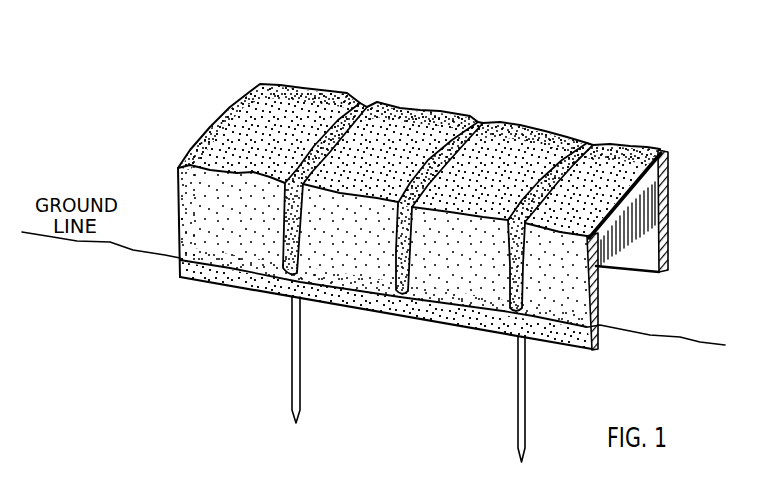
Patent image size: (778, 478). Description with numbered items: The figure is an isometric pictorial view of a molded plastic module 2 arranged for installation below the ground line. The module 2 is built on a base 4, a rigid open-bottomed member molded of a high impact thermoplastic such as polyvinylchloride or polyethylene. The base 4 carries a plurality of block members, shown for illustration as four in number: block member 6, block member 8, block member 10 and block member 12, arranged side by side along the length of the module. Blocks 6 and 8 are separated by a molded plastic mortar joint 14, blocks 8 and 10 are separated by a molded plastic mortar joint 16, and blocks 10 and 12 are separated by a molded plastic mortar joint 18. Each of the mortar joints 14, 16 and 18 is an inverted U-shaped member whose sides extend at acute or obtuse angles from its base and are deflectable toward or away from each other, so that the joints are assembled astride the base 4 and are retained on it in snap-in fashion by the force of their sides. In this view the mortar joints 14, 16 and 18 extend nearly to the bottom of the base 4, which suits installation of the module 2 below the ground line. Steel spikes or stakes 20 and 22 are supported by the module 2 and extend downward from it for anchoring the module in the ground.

The molded plastic module 2 is at (222, 76).
The base 4 is at (210, 283).
The block member 6 is at (233, 221).
The block member 8 is at (352, 244).
The block member 10 is at (468, 262).
The block member 12 is at (560, 283).
The molded plastic mortar joint 14 is at (365, 107).
The molded plastic mortar joint 16 is at (478, 122).
The molded plastic mortar joint 18 is at (590, 143).
The steel spike or stake 20 is at (300, 360).
The steel spike or stake 22 is at (527, 395).